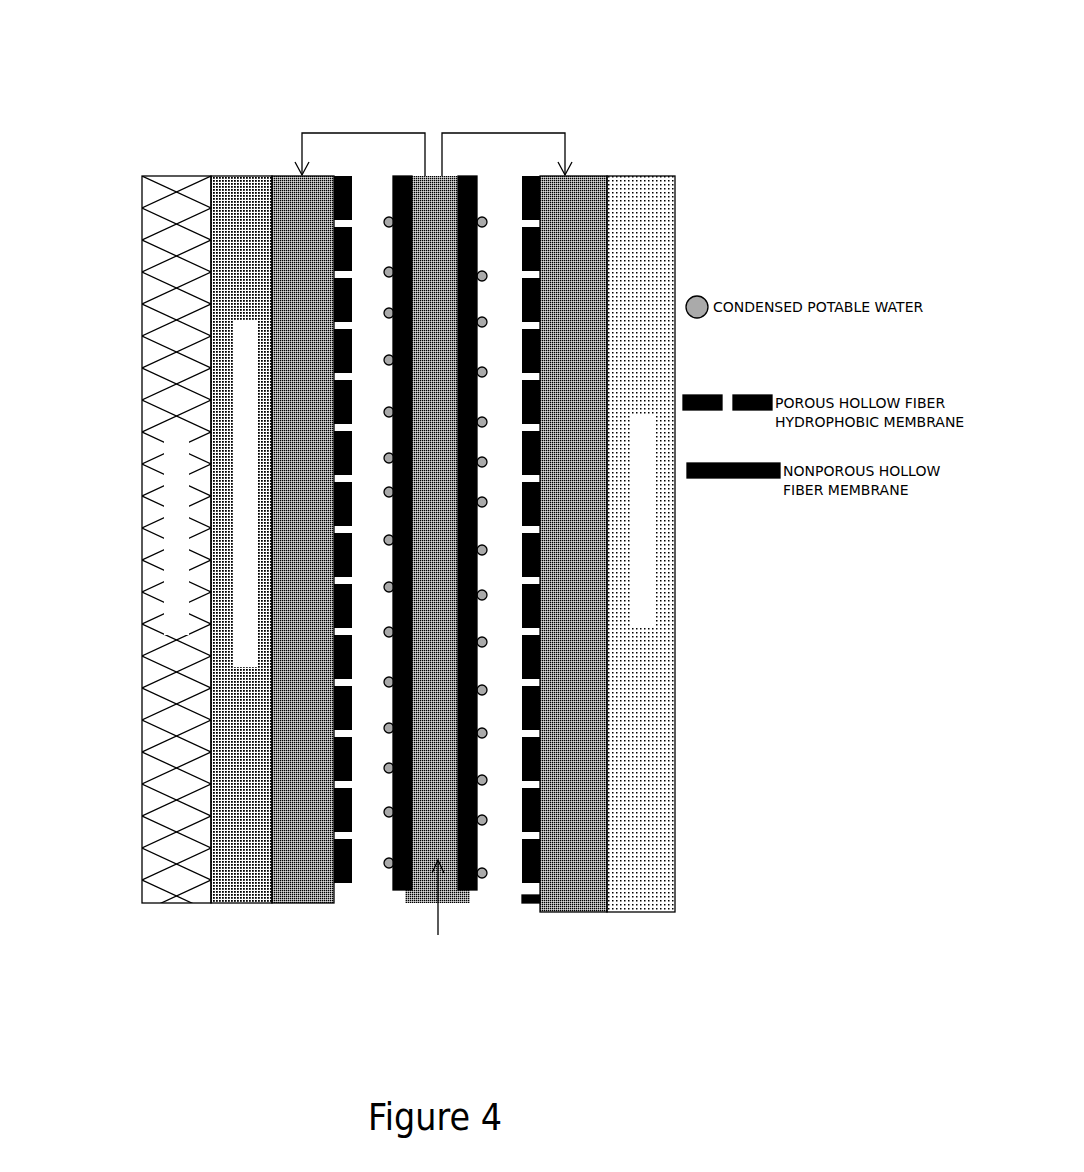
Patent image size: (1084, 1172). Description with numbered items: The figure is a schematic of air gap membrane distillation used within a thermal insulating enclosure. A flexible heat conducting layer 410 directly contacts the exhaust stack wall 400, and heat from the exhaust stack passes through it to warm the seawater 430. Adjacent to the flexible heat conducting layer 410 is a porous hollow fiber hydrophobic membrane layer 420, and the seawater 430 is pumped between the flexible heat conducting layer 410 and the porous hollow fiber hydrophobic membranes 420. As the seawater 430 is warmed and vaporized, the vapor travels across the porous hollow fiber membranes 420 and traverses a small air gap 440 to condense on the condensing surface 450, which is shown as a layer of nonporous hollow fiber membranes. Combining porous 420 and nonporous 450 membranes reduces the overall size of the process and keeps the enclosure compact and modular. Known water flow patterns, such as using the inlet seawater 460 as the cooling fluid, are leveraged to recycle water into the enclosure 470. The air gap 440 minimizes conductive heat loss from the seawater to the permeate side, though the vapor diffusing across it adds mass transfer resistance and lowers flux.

The exhaust stack wall 400 is at (417, 548).
The flexible heat conducting layer 410 is at (233, 907).
The porous hollow fiber hydrophobic membrane layer 420 is at (348, 885).
The seawater 430 is at (302, 908).
The air gap 440 is at (375, 885).
The condensing surface 450 is at (405, 905).
The inlet seawater 460 is at (463, 935).
The enclosure 470 is at (437, 74).